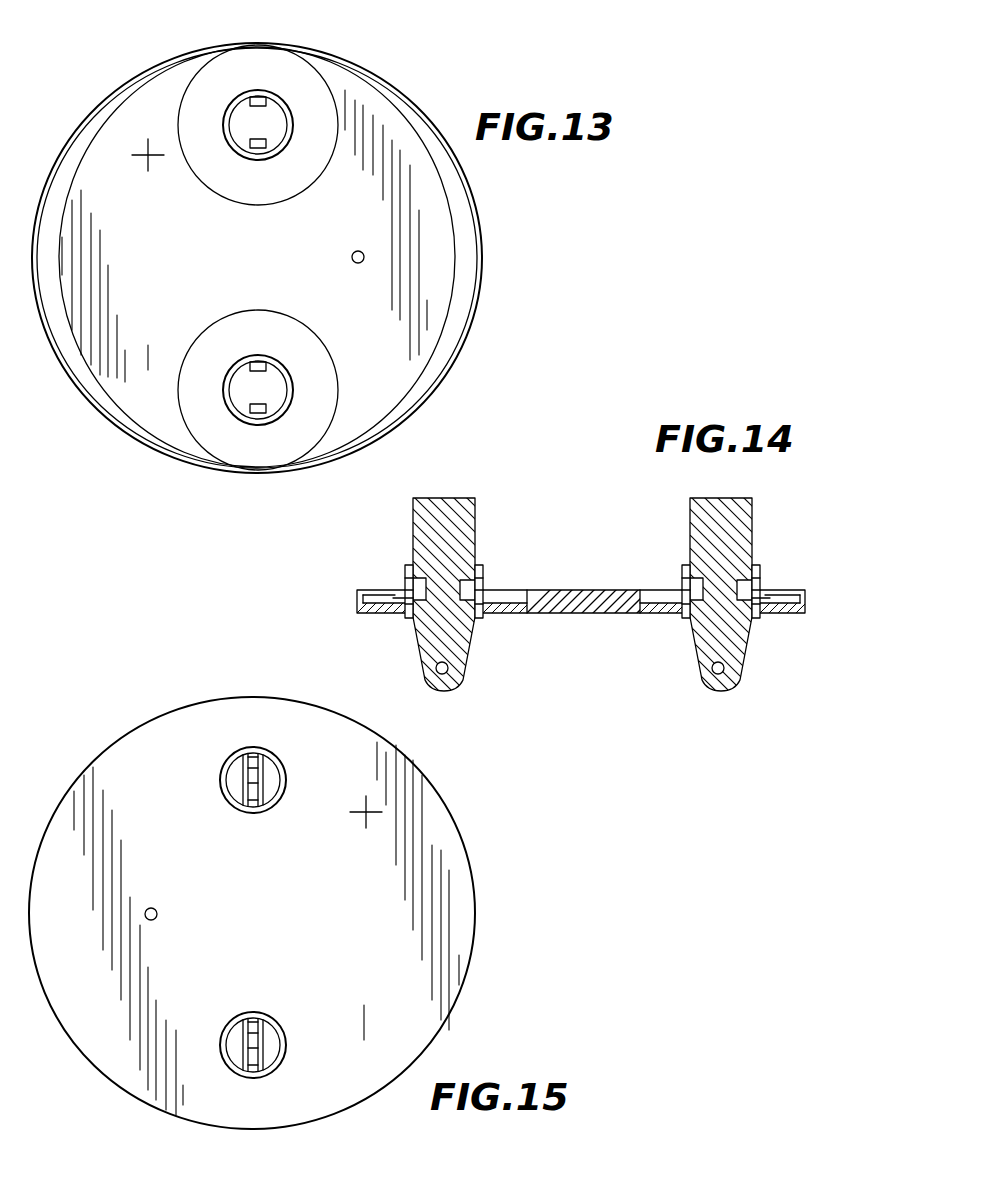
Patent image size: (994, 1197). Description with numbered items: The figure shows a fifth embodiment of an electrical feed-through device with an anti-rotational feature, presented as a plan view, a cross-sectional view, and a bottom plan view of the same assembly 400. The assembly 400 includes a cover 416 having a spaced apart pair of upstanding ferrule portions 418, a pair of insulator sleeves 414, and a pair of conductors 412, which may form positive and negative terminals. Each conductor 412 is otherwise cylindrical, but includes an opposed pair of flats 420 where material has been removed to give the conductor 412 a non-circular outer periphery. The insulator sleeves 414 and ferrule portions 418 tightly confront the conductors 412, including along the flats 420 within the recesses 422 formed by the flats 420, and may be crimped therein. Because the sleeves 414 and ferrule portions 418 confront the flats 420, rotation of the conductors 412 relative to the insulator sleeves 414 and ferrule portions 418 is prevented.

In FIG. 13, the assembly 400 is at (321, 266).
In FIG. 14, the assembly 400 is at (578, 591).
In FIG. 15, the assembly 400 is at (320, 892).
In FIG. 13, the conductor 412 is at (275, 123).
In FIG. 14, the conductor 412 is at (450, 682).
In FIG. 15, the conductor 412 is at (253, 912).
In FIG. 14, the insulator sleeve 414 is at (478, 565).
In FIG. 13, the cover 416 is at (437, 248).
In FIG. 14, the cover 416 is at (587, 607).
In FIG. 15, the cover 416 is at (153, 757).
In FIG. 14, the ferrule portion 418 is at (482, 583).
In FIG. 13, the flat 420 is at (263, 98).
In FIG. 14, the flat 420 is at (420, 585).
In FIG. 14, the recess 422 is at (398, 597).